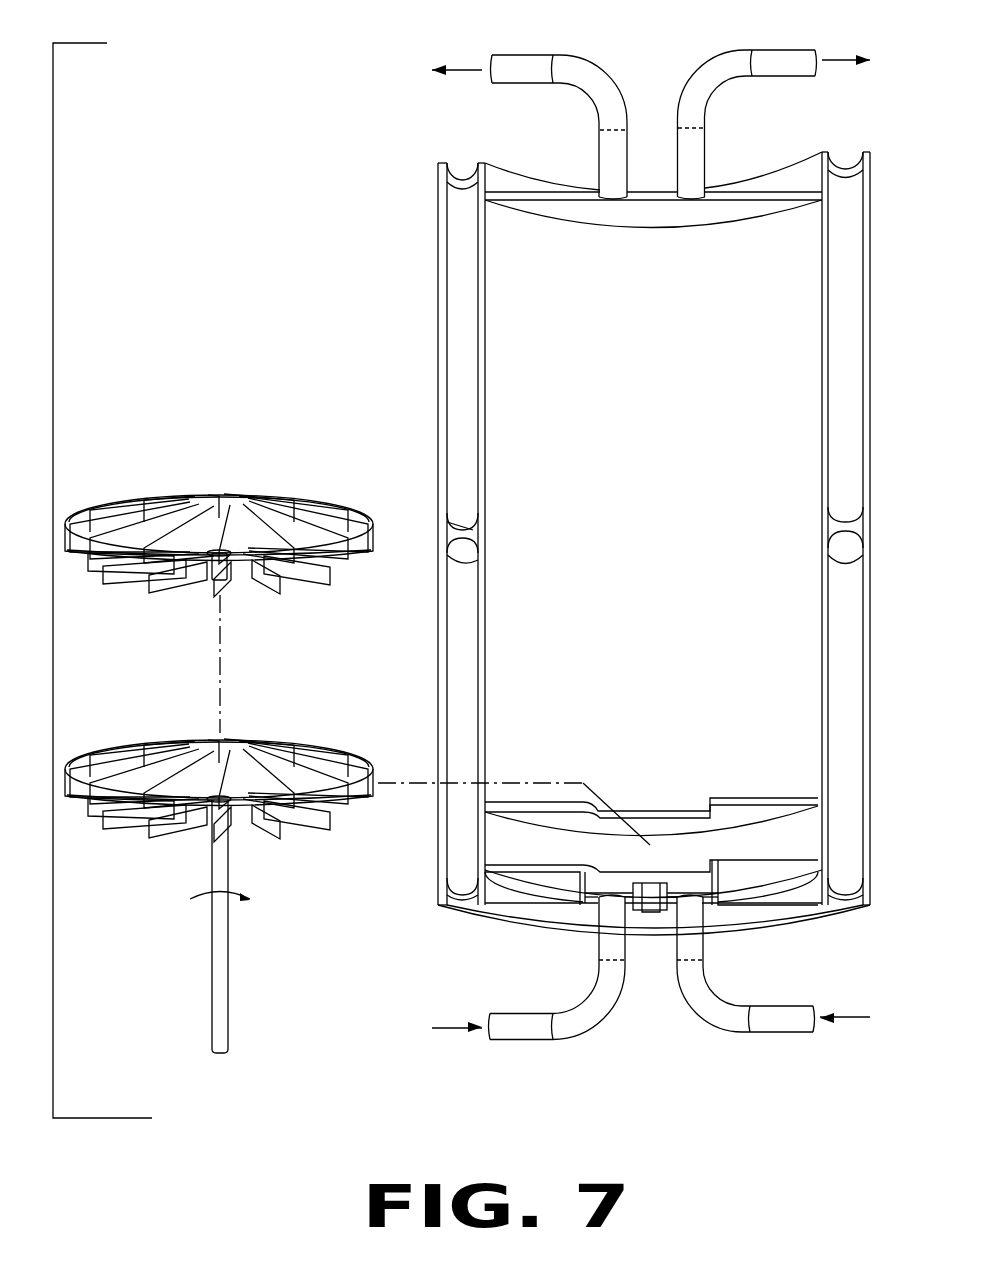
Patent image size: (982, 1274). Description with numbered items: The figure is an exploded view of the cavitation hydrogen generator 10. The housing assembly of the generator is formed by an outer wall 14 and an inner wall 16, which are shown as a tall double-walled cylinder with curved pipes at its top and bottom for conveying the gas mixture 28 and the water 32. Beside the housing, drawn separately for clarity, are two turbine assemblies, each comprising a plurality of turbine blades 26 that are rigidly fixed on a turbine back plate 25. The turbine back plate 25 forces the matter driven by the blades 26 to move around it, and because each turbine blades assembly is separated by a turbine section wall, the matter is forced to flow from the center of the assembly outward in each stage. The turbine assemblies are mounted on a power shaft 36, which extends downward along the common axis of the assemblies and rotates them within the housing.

The cavitation hydrogen generator 10 is at (380, 277).
The outer wall 14 is at (437, 378).
The inner wall 16 is at (818, 470).
The turbine back plate 25 is at (175, 503).
The turbine blade 26 is at (317, 545).
The gas mixture 28 is at (472, 70).
The water 32 is at (852, 1018).
The power shaft 36 is at (217, 960).